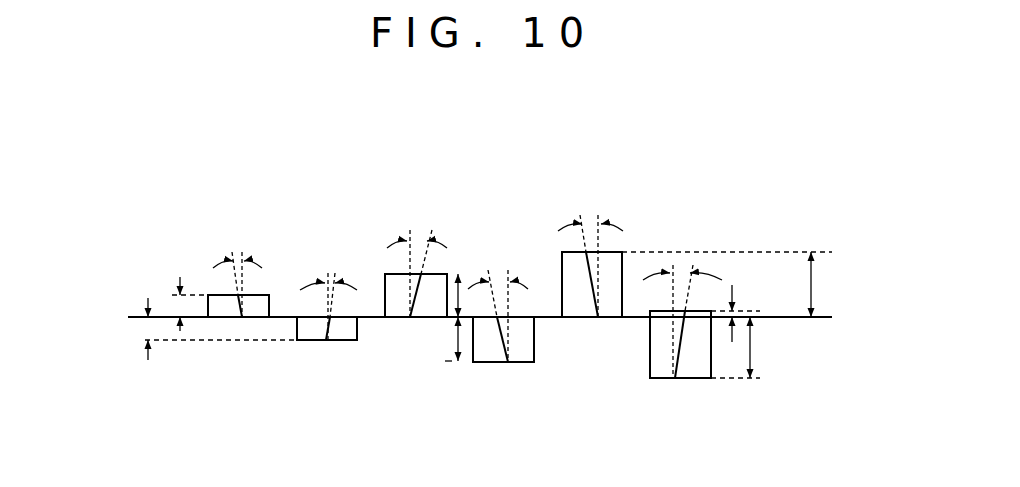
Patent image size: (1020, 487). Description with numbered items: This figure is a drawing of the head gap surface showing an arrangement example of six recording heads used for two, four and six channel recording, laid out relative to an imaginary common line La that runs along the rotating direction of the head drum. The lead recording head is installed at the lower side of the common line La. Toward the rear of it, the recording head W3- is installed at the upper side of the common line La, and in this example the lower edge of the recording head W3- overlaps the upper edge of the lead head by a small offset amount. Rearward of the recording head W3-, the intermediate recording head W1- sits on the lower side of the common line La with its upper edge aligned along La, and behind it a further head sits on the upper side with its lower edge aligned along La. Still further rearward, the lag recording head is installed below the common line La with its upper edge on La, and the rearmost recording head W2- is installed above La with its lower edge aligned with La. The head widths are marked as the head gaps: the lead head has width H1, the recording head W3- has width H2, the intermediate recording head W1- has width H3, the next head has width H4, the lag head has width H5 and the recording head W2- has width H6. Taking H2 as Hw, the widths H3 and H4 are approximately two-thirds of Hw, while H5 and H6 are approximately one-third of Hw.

The imaginary common line La is at (372, 318).
The recording head W2- is at (215, 297).
The recording head W3- is at (568, 272).
The intermediate recording head W1- is at (490, 358).
The head width of lead record head W1+ H1 is at (746, 344).
The head width of record head W3- H2 is at (735, 284).
The head width of intermediate record head W1- H3 is at (457, 343).
The head width of record head W3+ H4 is at (457, 290).
The head width of lag record head W2+ H5 is at (148, 330).
The head width of record head W2- H6 is at (178, 305).